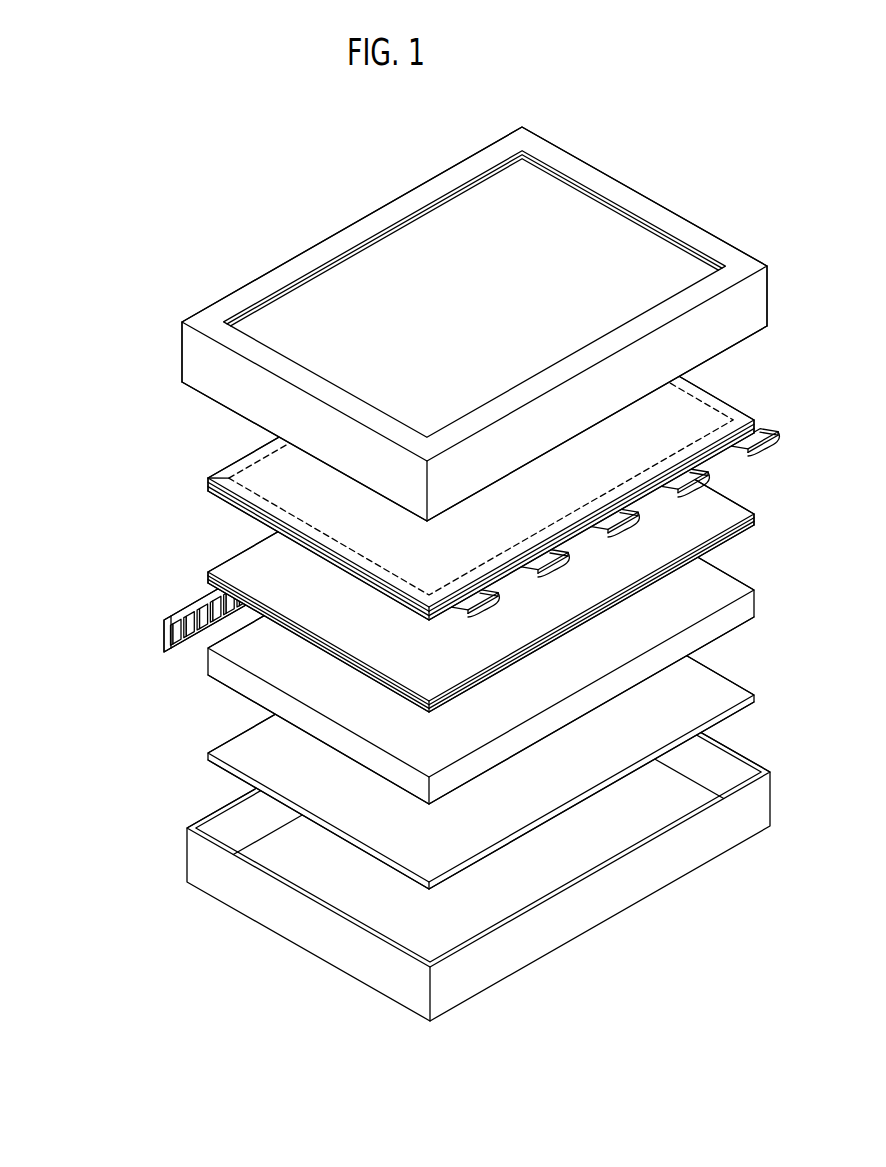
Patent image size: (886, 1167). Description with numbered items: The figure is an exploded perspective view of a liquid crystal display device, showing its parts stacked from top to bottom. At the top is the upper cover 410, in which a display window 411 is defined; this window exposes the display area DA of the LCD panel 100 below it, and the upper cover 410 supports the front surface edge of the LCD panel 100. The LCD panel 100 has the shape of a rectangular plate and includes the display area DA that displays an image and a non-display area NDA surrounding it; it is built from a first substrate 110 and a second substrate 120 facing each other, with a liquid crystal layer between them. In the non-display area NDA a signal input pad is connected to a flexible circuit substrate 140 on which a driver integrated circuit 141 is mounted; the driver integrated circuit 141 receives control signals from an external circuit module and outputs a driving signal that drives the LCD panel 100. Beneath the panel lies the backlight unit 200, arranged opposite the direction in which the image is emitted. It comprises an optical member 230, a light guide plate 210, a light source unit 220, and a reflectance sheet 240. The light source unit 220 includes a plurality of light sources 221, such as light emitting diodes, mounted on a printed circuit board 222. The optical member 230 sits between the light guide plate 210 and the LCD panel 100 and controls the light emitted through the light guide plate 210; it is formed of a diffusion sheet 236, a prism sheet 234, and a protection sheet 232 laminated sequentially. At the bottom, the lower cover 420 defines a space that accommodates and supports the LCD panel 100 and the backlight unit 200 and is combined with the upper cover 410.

The LCD panel 100 is at (99, 478).
The first substrate 110 is at (210, 492).
The second substrate 120 is at (210, 482).
The flexible circuit substrate 140 is at (761, 433).
The driver integrated circuit 141 is at (751, 450).
The backlight unit 200 is at (56, 553).
The light guide plate 210 is at (212, 668).
The light source unit 220 is at (99, 613).
The light sources 221 is at (163, 621).
The printed circuit board 222 is at (163, 644).
The optical member 230 is at (99, 538).
The protection sheet 232 is at (207, 571).
The prism sheet 234 is at (207, 576).
The diffusion sheet 236 is at (207, 581).
The reflectance sheet 240 is at (237, 745).
The upper cover 410 is at (432, 324).
The display window 411 is at (410, 270).
The lower cover 420 is at (178, 853).
The non-display area NDA is at (253, 448).
The display area DA is at (247, 473).